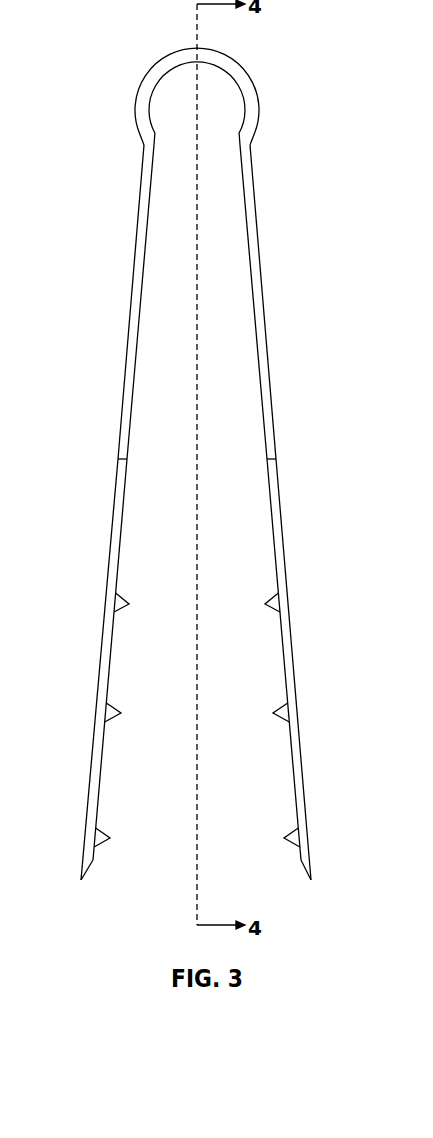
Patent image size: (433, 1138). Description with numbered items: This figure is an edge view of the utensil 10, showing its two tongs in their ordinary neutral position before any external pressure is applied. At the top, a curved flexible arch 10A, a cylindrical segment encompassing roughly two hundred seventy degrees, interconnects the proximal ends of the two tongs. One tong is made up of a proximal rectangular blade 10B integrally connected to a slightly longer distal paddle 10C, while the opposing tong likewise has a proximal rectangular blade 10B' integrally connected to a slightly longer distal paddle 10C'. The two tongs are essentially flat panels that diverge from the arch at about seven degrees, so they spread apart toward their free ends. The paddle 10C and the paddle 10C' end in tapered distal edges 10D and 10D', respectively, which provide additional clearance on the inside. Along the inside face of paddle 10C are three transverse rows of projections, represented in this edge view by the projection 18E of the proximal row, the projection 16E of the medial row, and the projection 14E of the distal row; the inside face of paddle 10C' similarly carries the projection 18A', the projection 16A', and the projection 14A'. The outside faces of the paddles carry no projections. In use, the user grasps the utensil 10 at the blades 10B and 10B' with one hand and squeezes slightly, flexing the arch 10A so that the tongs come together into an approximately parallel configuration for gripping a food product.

The utensil 10 is at (122, 171).
The curved flexible arch 10A is at (257, 92).
The proximal rectangular blade 10B is at (291, 302).
The proximal rectangular blade 10B' is at (101, 302).
The distal paddle 10C is at (292, 669).
The distal paddle 10C' is at (100, 669).
The tapered distal edge 10D is at (288, 891).
The tapered distal edge 10D' is at (105, 893).
The projection 14E is at (283, 837).
The projection 14A' is at (120, 814).
The projection 16E is at (271, 712).
The projection 16A' is at (133, 689).
The projection 18E is at (263, 604).
The projection 18A' is at (142, 581).